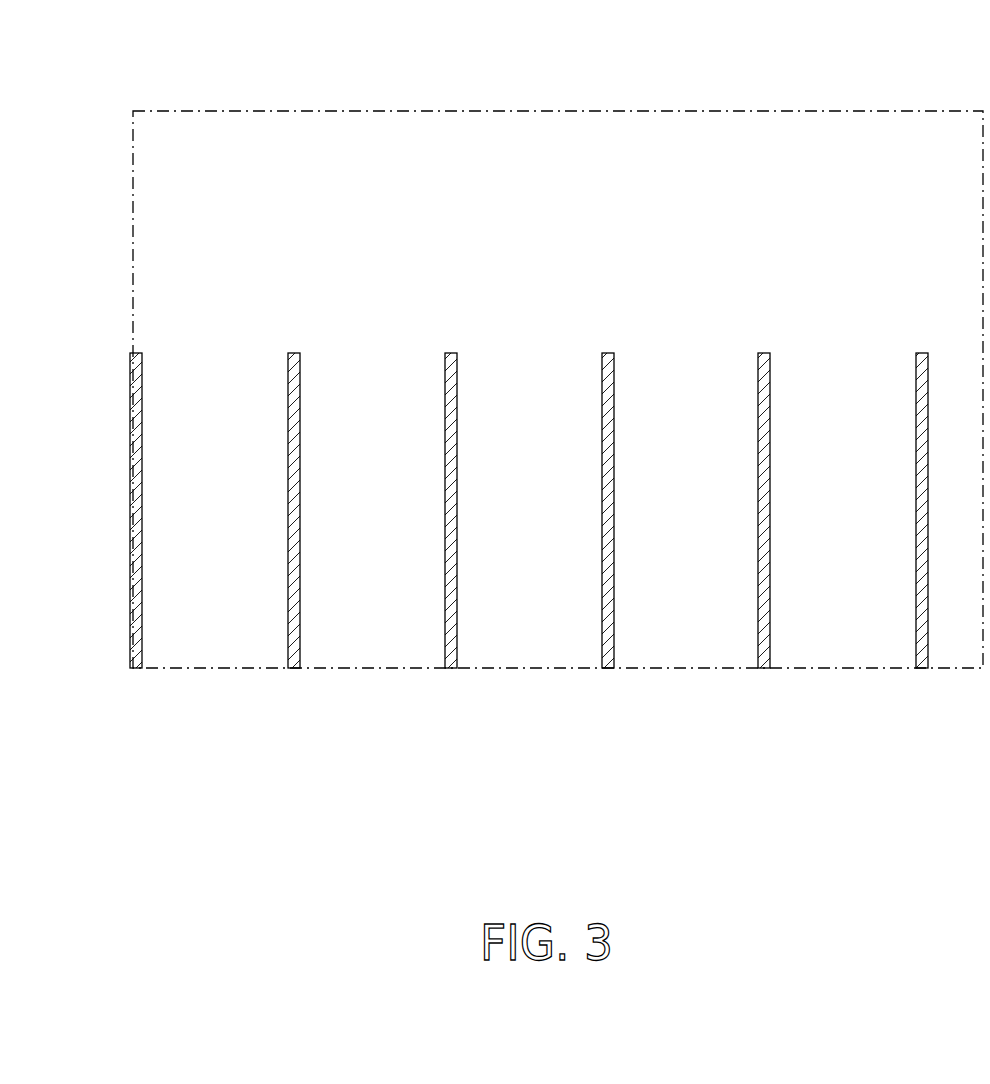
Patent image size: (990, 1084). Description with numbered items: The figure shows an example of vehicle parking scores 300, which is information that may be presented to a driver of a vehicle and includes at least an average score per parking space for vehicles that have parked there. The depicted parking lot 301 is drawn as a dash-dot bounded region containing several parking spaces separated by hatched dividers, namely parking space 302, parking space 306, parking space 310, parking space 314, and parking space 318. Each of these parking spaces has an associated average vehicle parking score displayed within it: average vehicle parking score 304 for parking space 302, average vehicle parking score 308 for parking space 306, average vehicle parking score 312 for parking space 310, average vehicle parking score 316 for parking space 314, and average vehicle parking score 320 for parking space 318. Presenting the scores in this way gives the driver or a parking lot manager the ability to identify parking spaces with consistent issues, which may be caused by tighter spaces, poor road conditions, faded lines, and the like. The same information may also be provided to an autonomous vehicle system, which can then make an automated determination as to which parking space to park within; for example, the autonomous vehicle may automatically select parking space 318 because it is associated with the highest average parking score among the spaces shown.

The vehicle parking scores 300 is at (535, 352).
The parking lot 301 is at (558, 110).
The parking space 302 is at (224, 346).
The average vehicle parking score 304 is at (201, 508).
The parking space 306 is at (367, 346).
The average vehicle parking score 308 is at (373, 508).
The parking space 310 is at (542, 346).
The average vehicle parking score 312 is at (533, 508).
The parking space 314 is at (701, 346).
The average vehicle parking score 316 is at (678, 508).
The parking space 318 is at (854, 346).
The average vehicle parking score 320 is at (841, 508).